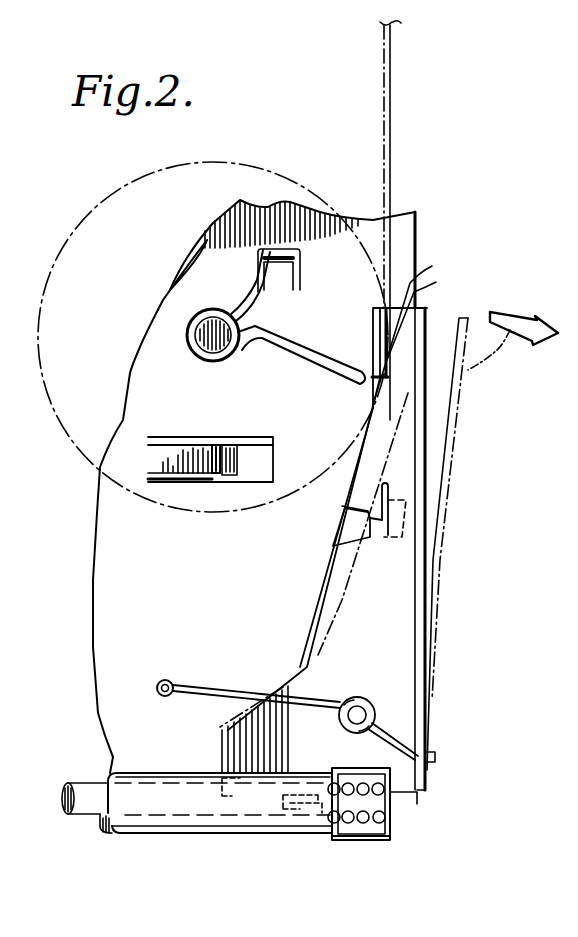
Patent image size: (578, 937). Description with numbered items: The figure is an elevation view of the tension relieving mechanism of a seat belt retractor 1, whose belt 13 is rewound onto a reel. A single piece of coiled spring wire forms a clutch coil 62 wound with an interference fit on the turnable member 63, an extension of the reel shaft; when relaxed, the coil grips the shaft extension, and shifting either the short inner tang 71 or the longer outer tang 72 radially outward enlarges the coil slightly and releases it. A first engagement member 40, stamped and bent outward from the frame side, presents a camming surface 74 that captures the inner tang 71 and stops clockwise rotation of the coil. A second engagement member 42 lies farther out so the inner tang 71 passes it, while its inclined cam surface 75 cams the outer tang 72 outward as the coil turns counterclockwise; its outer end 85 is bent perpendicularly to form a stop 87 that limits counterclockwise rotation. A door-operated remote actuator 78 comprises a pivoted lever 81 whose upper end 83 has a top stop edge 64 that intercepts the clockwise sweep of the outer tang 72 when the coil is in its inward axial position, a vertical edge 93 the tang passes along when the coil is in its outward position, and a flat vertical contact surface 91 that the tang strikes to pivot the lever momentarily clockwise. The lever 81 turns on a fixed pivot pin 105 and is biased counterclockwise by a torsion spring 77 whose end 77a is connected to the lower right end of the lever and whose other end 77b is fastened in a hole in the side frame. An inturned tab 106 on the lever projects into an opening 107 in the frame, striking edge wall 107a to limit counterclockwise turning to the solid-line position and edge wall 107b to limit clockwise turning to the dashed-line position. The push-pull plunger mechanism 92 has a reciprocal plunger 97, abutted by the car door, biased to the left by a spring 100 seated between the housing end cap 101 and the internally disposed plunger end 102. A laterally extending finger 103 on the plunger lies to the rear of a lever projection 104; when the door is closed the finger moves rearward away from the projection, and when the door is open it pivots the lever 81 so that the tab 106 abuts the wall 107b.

The retractor 1 is at (298, 170).
The belt 13 is at (389, 120).
The first engagement member 40 is at (299, 275).
The second engagement member 42 is at (173, 507).
The spring coil 62 is at (212, 308).
The turnable member 63 is at (216, 342).
The stopping surface 64 is at (415, 323).
The inner tang 71 is at (261, 300).
The outer tang 72 is at (346, 373).
The camming surface 74 is at (268, 254).
The cam surface 75 is at (180, 482).
The torsion spring 77 is at (236, 690).
The end of torsion spring 77a is at (427, 752).
The other end of torsion spring 77b is at (178, 682).
The remote actuator 78 is at (185, 745).
The pivoted lever 81 is at (416, 623).
The upper end of lever 83 is at (426, 312).
The outer end of second engagement member 85 is at (240, 458).
The stop 87 is at (228, 446).
The flat vertical contact surface 91 is at (373, 317).
The plunger mechanism 92 is at (146, 835).
The vertical edge of upper lever end 93 is at (425, 315).
The plunger 97 is at (82, 790).
The spring 100 is at (360, 822).
The end cap 101 is at (392, 814).
The internally disposed end of plunger 102 is at (318, 825).
The plunger finger 103 is at (275, 823).
The lever projection 104 is at (232, 743).
The pivot pin 105 is at (360, 702).
The inturned tab 106 is at (327, 530).
The opening 107 is at (338, 548).
The edge wall 107a is at (334, 504).
The edge wall 107b is at (390, 556).